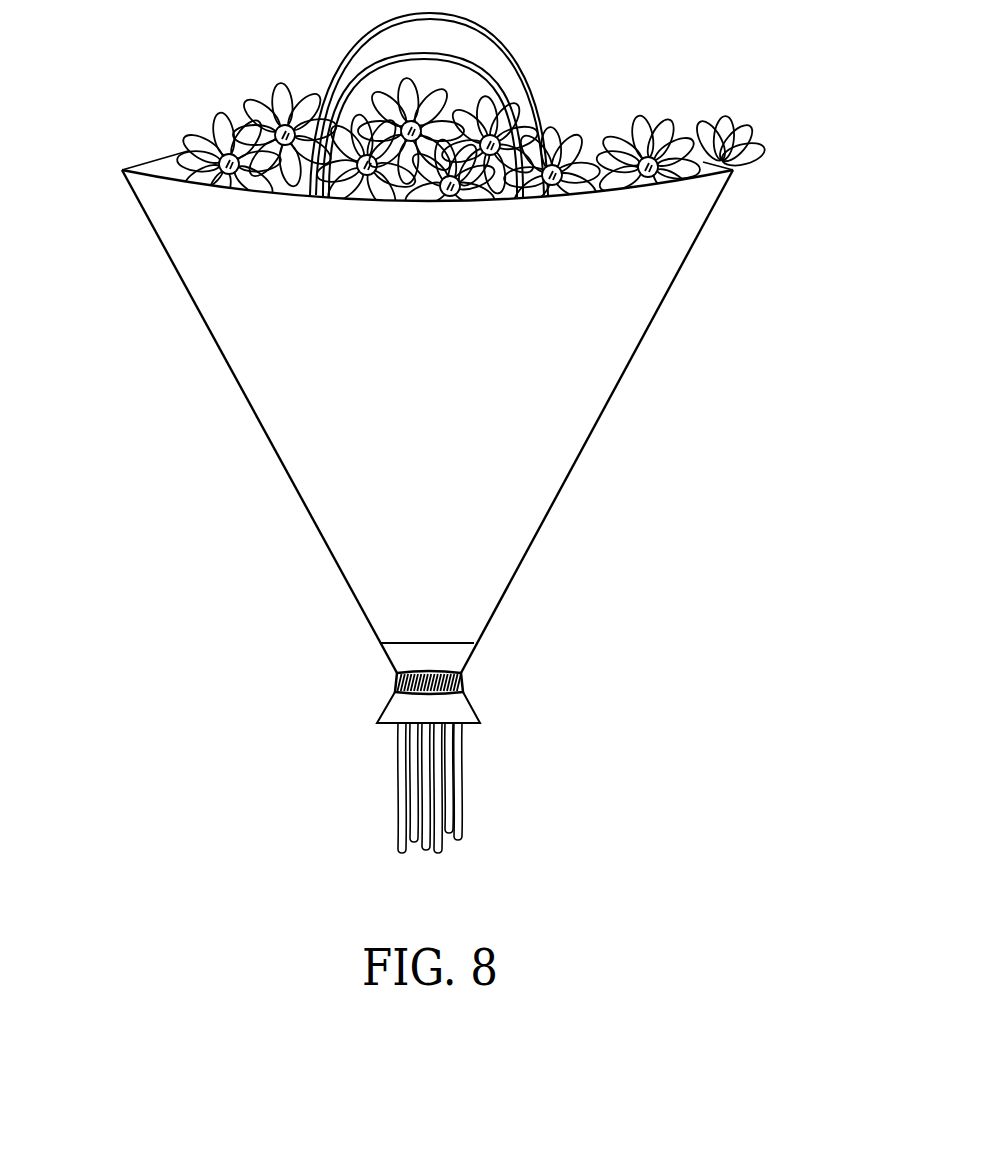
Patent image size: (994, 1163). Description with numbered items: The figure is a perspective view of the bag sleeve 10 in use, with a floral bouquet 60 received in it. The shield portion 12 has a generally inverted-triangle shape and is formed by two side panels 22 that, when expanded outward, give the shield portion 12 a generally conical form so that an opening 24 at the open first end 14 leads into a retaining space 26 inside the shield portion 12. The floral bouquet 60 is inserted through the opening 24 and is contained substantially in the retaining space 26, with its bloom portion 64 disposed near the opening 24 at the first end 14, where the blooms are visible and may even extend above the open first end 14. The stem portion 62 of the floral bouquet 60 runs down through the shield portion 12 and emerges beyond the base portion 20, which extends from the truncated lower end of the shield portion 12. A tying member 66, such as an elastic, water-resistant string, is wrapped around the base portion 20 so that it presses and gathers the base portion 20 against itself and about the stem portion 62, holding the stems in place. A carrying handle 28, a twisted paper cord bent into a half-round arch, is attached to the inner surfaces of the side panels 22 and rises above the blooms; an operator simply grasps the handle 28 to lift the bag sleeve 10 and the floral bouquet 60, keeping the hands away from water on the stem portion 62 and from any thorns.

The bag sleeve 10 is at (736, 109).
The shield portion 12 is at (593, 433).
The first end 14 is at (713, 199).
The base portion 20 is at (381, 644).
The side panel 22 is at (328, 455).
The opening 24 is at (152, 150).
The retaining space 26 is at (595, 138).
The carrying handle 28 is at (493, 73).
The floral bouquet 60 is at (201, 134).
The stem portion 62 is at (461, 794).
The bloom portion 64 is at (595, 147).
The tying member 66 is at (463, 673).